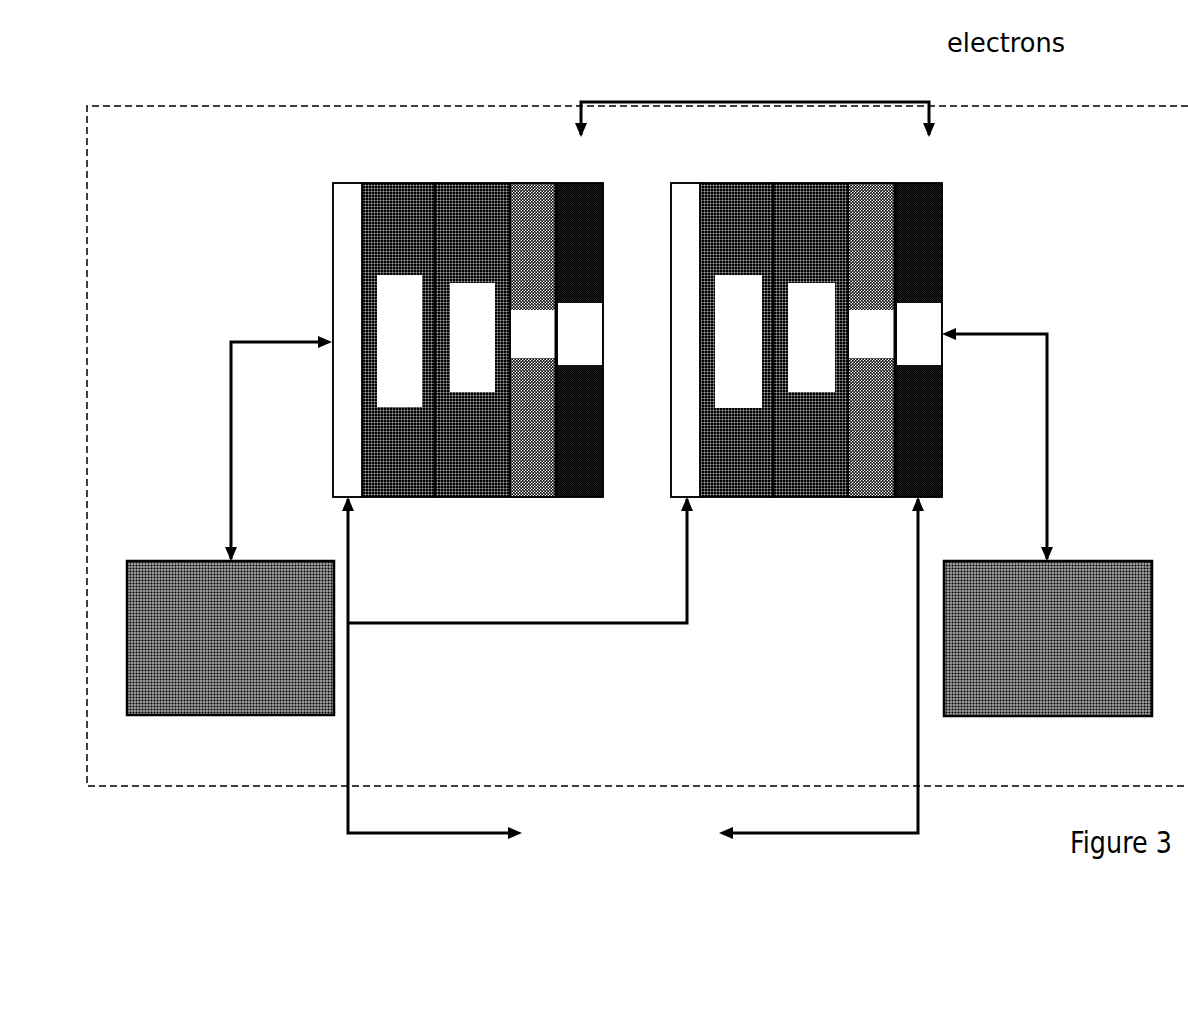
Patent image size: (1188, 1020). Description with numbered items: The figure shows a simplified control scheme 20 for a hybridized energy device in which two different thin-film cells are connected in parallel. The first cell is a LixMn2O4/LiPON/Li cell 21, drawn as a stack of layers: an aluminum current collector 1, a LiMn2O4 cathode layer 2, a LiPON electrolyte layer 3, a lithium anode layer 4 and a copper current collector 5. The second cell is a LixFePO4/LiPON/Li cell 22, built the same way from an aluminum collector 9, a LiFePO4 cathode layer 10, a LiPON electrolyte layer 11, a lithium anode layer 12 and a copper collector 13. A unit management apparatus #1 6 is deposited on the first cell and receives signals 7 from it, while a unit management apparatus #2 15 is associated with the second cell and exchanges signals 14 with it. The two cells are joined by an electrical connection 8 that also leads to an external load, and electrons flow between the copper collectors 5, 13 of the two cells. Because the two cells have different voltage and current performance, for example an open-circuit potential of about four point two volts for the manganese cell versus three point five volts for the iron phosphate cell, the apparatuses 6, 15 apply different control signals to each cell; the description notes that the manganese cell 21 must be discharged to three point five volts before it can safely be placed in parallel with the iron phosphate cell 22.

The aluminum current collector (first unit) 1 is at (346, 322).
The LiMn2O4 cathode layer 2 is at (398, 320).
The LiPON electrolyte layer (first unit) 3 is at (472, 320).
The lithium anode layer (first unit) 4 is at (533, 320).
The copper current collector (first unit) 5 is at (579, 320).
The unit management apparatus #1 6 is at (230, 615).
The signals from first unit to management apparatus #1 7 is at (259, 413).
The electrical connection / wiring between units and external load 8 is at (633, 562).
The aluminum current collector (second unit) 9 is at (684, 320).
The LiFePO4 cathode layer 10 is at (736, 320).
The LiPON electrolyte layer (second unit) 11 is at (810, 320).
The lithium anode layer (second unit) 12 is at (873, 320).
The copper current collector (second unit) 13 is at (921, 320).
The signals from management apparatus #2 to second unit 14 is at (1029, 420).
The unit management apparatus #2 15 is at (1055, 618).
The control scheme 20 is at (637, 430).
The LixMn2O4/LiPON/Li cell 21 is at (467, 342).
The LixFePO4/LiPON/Li cell 22 is at (808, 342).